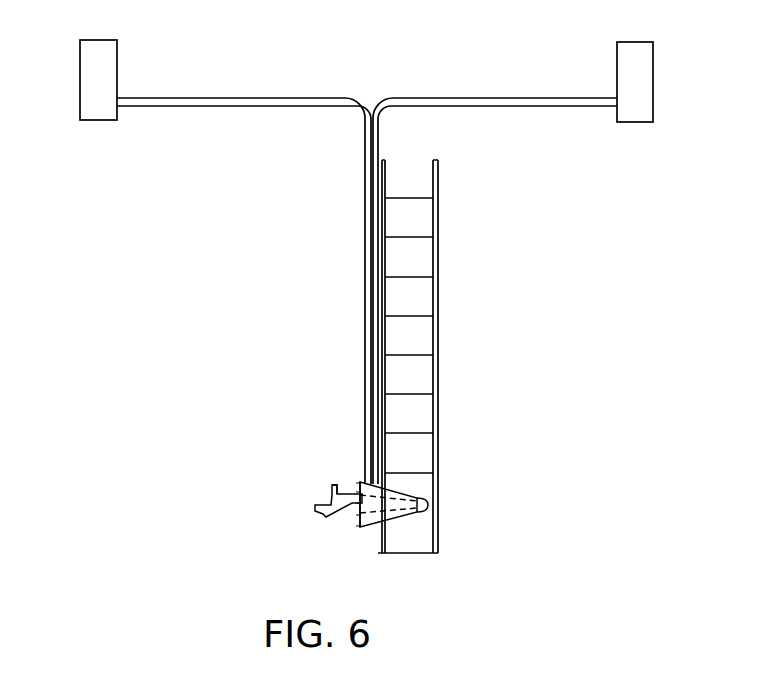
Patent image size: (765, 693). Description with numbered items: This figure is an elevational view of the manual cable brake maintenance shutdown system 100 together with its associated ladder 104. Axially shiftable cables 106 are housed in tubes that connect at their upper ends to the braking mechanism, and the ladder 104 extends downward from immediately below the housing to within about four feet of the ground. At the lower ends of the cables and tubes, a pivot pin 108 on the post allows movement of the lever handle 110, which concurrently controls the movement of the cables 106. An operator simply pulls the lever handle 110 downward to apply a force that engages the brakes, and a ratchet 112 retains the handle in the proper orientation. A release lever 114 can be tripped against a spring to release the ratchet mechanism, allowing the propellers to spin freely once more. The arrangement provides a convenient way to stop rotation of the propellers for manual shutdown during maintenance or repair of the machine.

The manual cable brake maintenance shutdown system 100 is at (349, 466).
The ladder 104 is at (440, 221).
The axially shiftable cables 106 is at (433, 98).
The pivot pin 108 is at (428, 504).
The lever handle 110 is at (325, 518).
The ratchet 112 is at (359, 521).
The release lever 114 is at (325, 502).